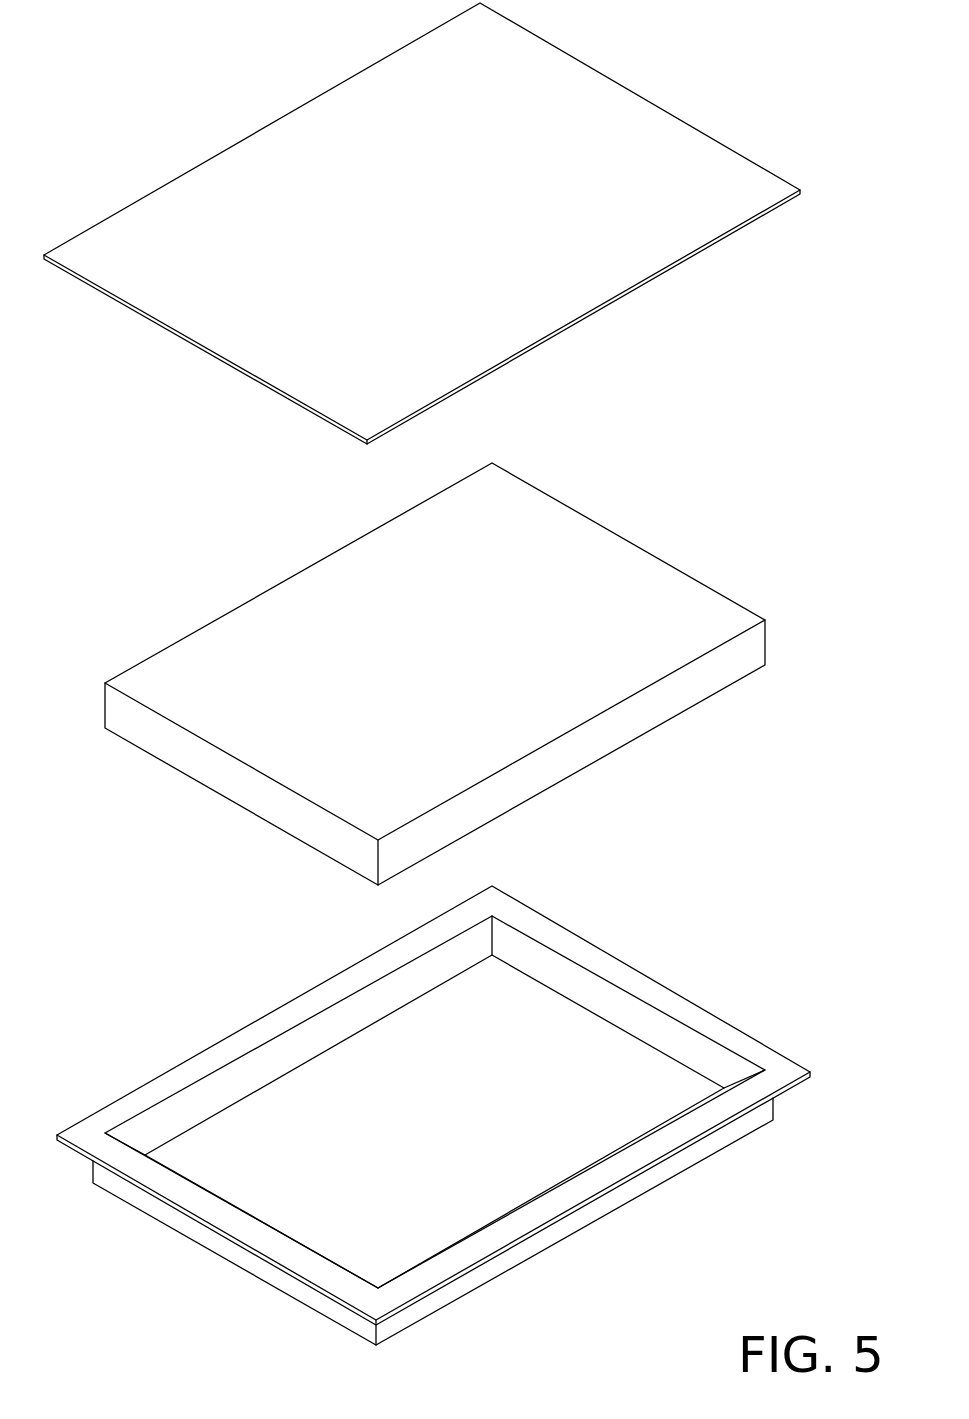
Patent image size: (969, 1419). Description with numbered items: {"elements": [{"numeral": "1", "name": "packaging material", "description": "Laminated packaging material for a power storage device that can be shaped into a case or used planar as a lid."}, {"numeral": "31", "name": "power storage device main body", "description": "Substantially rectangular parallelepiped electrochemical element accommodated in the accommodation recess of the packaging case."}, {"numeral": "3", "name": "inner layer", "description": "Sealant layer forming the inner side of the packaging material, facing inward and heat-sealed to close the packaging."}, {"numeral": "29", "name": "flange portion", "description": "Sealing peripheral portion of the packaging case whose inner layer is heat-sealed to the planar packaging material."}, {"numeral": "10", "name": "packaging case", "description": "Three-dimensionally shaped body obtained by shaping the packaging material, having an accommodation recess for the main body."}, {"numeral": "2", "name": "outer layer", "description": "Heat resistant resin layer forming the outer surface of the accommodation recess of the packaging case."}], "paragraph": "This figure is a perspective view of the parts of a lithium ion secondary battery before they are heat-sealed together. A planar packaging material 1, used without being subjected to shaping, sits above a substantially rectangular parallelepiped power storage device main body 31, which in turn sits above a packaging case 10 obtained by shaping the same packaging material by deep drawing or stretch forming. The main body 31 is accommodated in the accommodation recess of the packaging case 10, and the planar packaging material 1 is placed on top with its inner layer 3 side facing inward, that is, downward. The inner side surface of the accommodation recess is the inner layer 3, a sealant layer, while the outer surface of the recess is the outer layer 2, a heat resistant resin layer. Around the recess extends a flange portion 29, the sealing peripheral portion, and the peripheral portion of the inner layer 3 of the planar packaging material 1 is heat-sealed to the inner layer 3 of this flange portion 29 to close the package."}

The cover plate 1 is at (622, 113).
The block member 31 is at (602, 552).
The accommodating groove 3 is at (543, 1044).
The flange 29 is at (648, 988).
The housing 10 is at (433, 1100).
The body 2 is at (565, 1227).